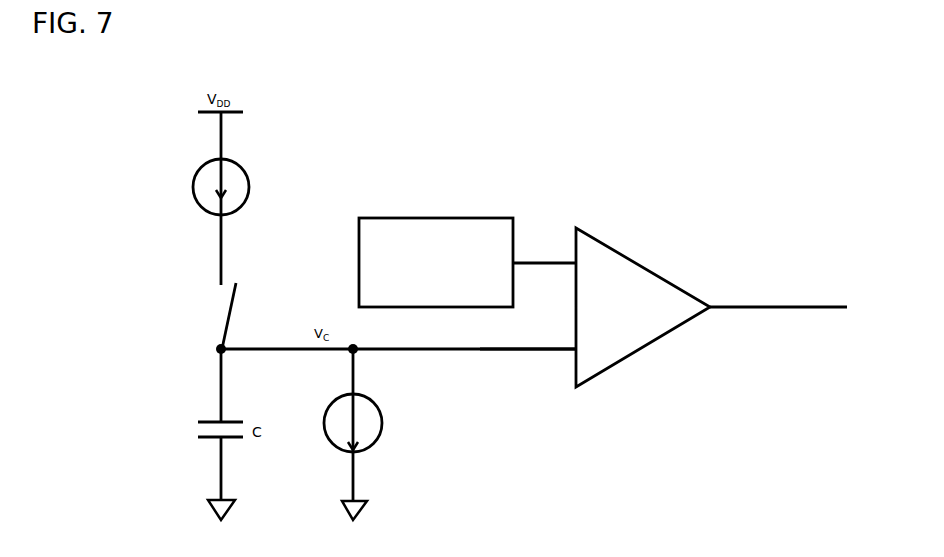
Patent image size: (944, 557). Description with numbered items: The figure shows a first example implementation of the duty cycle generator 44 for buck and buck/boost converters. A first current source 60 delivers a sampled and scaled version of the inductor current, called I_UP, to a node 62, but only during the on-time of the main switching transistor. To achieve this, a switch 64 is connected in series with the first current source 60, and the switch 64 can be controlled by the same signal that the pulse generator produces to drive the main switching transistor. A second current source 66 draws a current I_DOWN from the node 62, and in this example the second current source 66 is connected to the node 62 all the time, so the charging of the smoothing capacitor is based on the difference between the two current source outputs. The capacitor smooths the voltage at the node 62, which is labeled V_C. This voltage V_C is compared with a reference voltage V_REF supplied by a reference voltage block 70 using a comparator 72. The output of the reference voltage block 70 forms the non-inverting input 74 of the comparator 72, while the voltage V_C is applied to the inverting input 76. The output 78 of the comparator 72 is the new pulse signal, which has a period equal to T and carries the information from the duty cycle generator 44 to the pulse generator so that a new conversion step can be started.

The duty cycle generator 44 is at (708, 158).
The first current source 60 is at (204, 209).
The node 62 is at (219, 353).
The switch 64 is at (226, 311).
The second current source 66 is at (377, 440).
The reference voltage block 70 is at (412, 218).
The comparator 72 is at (579, 229).
The non-inverting input 74 is at (550, 265).
The inverting input 76 is at (525, 351).
The output 78 is at (812, 308).